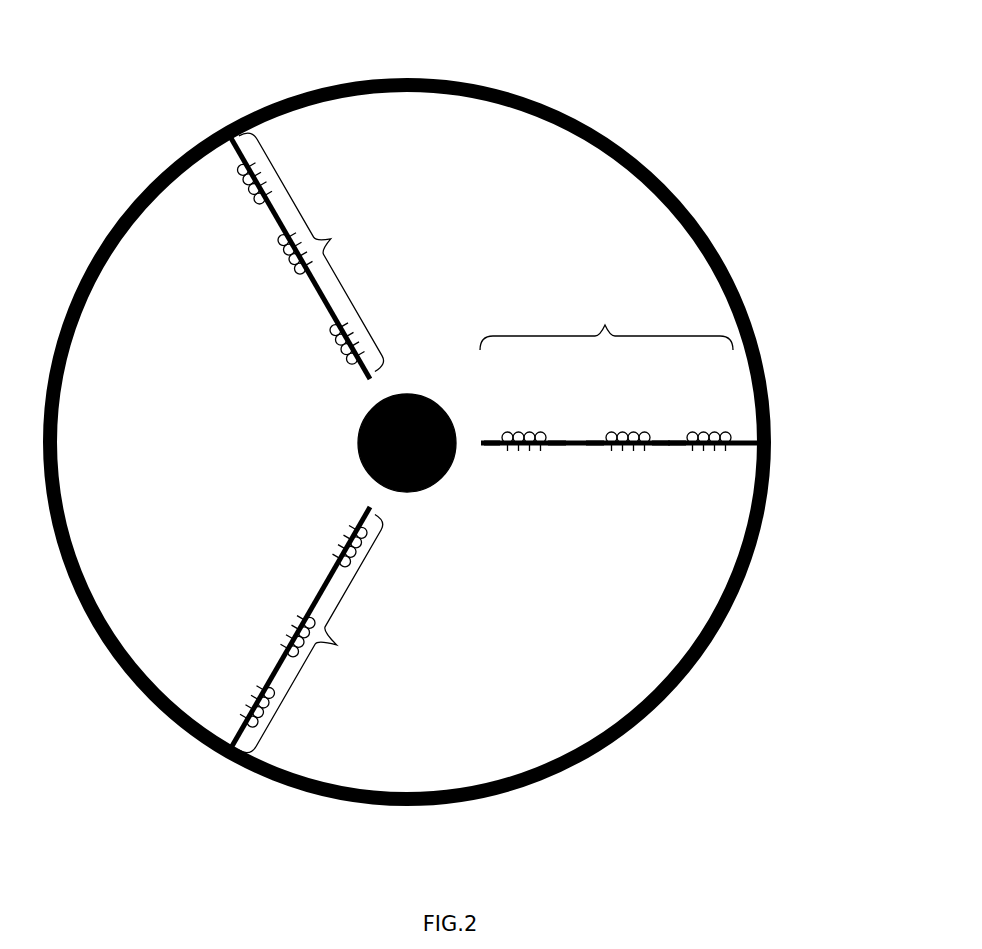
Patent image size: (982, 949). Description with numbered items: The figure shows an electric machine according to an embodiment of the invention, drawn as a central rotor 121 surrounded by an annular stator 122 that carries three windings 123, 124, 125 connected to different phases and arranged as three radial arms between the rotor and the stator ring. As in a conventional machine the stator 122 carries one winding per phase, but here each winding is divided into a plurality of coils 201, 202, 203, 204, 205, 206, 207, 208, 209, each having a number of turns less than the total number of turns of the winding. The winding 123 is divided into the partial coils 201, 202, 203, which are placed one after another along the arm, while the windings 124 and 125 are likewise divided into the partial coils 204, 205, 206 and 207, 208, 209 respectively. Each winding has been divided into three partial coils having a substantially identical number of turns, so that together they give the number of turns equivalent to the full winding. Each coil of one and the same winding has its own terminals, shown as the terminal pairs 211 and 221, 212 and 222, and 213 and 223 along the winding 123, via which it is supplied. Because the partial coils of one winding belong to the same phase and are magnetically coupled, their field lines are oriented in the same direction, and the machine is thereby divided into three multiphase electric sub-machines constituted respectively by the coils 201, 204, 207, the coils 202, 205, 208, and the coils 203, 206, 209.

The rotor 121 is at (420, 490).
The stator 122 is at (560, 110).
The winding 123 is at (605, 325).
The winding 124 is at (331, 239).
The winding 125 is at (338, 644).
The coil 201 is at (710, 428).
The coil 202 is at (625, 428).
The coil 203 is at (520, 430).
The coil 204 is at (236, 190).
The coil 205 is at (277, 268).
The coil 206 is at (325, 350).
The coil 207 is at (250, 700).
The coil 208 is at (282, 625).
The coil 209 is at (338, 538).
The terminal 211 is at (745, 447).
The terminal 212 is at (663, 447).
The terminal 213 is at (558, 447).
The terminal 221 is at (677, 447).
The terminal 222 is at (595, 447).
The terminal 223 is at (492, 447).